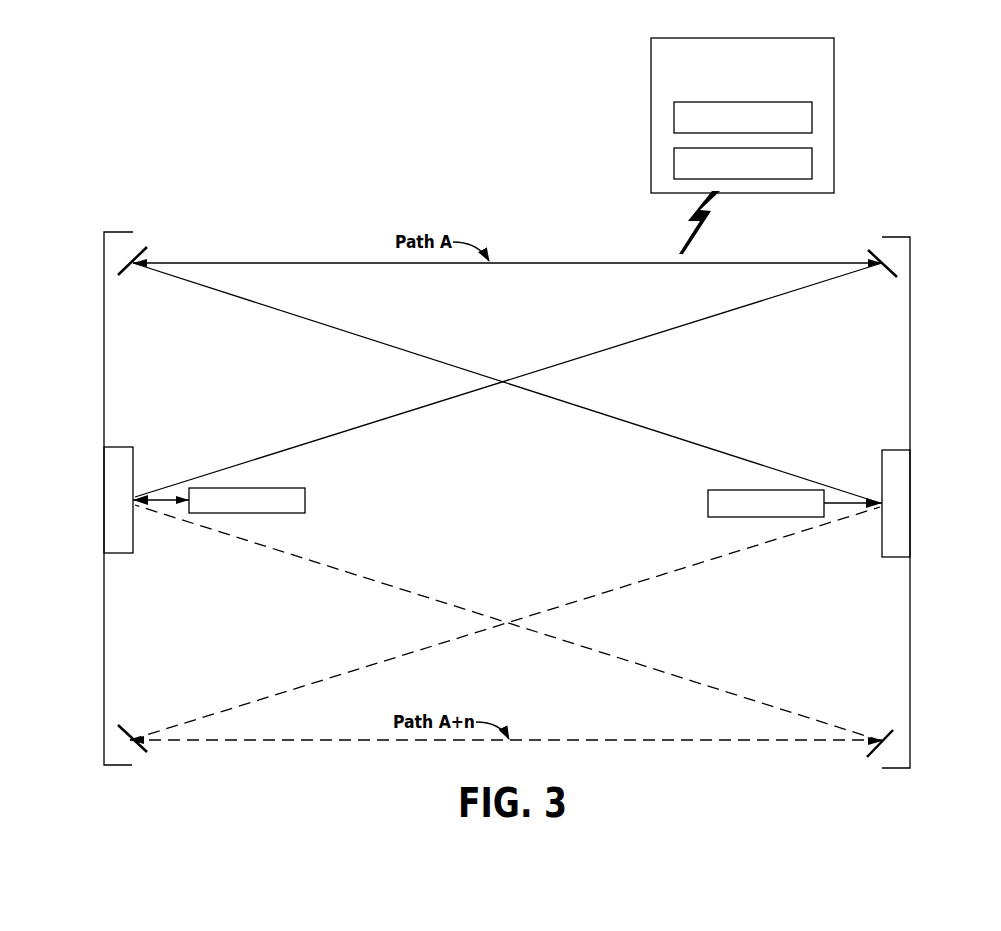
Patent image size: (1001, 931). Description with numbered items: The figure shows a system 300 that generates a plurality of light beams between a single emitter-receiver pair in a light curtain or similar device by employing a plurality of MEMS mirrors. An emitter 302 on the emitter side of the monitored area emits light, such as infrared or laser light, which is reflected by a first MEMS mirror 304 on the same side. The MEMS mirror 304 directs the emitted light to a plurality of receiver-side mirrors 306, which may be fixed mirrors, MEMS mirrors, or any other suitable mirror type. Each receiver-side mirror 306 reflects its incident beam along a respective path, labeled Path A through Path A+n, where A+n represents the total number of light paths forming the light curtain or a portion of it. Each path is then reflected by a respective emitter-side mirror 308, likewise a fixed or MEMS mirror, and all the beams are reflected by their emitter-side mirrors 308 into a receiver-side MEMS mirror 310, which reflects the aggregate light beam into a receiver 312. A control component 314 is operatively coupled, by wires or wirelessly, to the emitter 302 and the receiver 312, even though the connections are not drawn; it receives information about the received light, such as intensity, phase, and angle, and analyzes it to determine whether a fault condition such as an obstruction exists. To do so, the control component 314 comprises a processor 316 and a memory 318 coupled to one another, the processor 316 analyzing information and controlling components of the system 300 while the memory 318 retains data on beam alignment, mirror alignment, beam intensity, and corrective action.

The system 300 is at (178, 78).
The emitter 302 is at (727, 490).
The first MEMS mirror 304 is at (905, 502).
The receiver-side mirror 306 is at (128, 260).
The emitter-side mirror 308 is at (894, 270).
The receiver-side MEMS mirror 310 is at (112, 493).
The receiver 312 is at (269, 487).
The control component 314 is at (835, 75).
The processor 316 is at (674, 119).
The memory 318 is at (674, 165).